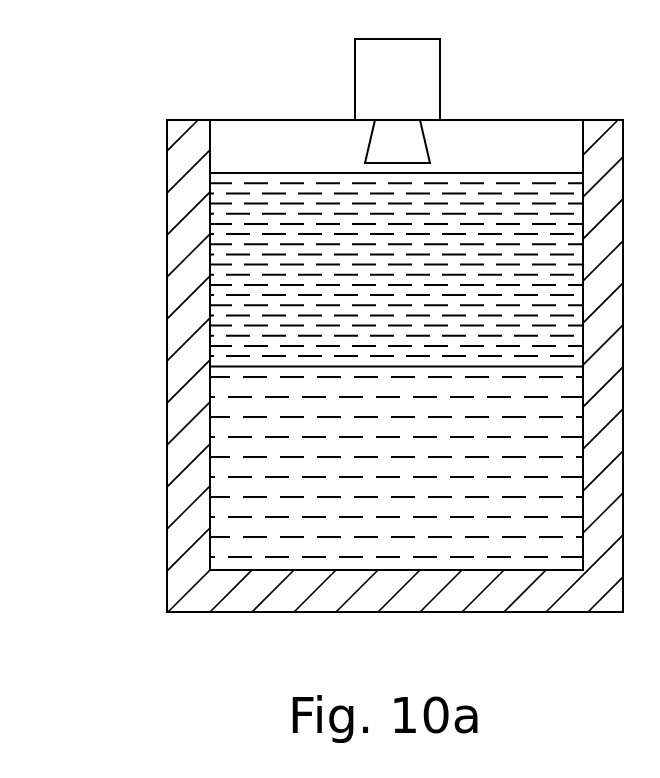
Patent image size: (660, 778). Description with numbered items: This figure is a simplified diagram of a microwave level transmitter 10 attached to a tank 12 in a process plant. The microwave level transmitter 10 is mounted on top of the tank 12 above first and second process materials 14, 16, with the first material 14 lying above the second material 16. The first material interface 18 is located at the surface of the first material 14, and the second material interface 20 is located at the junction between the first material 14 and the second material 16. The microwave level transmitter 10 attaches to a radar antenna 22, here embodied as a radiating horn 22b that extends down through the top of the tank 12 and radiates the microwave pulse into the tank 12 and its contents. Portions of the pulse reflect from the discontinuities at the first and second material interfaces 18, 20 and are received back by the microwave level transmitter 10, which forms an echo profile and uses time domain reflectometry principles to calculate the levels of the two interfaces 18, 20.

The microwave level transmitter 10 is at (334, 100).
The tank 12 is at (167, 305).
The first process material 14 is at (232, 227).
The second process material 16 is at (237, 555).
The first material interface 18 is at (237, 170).
The second material interface 20 is at (235, 370).
The radar antenna 22 is at (418, 143).
The radiating horn 22b is at (397, 141).